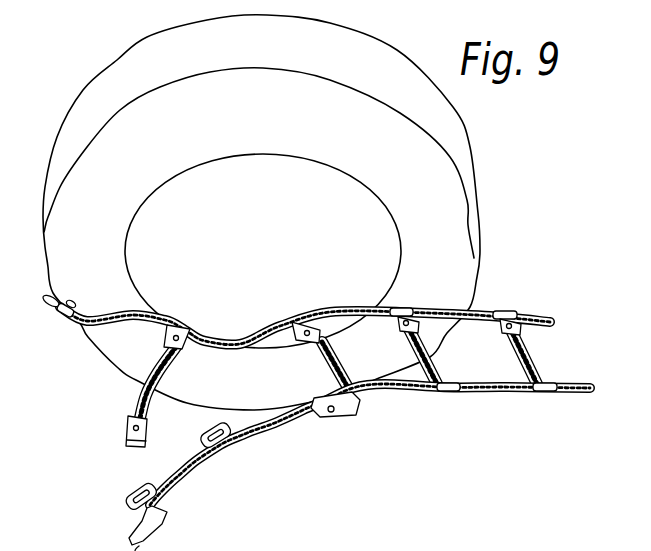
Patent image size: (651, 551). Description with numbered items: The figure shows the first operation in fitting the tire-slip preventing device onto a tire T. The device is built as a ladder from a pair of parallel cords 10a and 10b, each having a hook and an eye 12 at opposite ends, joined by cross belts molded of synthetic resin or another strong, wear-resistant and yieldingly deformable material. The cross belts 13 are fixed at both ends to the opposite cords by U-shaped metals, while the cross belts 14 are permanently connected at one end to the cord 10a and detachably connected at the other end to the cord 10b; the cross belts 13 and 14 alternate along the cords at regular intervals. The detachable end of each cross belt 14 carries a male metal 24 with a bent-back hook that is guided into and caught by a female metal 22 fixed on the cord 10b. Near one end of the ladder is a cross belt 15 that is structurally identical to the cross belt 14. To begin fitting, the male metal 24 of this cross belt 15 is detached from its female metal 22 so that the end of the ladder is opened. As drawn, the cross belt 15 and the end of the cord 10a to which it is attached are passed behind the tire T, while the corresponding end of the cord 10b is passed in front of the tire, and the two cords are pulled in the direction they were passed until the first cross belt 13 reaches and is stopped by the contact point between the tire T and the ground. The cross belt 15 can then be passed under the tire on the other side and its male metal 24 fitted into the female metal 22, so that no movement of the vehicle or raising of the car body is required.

The tire T is at (470, 157).
The cord 10a is at (237, 333).
The cord 10b is at (487, 392).
The eye 12 is at (47, 297).
The cross belt 13 is at (342, 308).
The cross belt 14 is at (433, 358).
The cross belt 15 is at (137, 387).
The female metal 22 is at (227, 445).
The male metal 24 is at (125, 442).